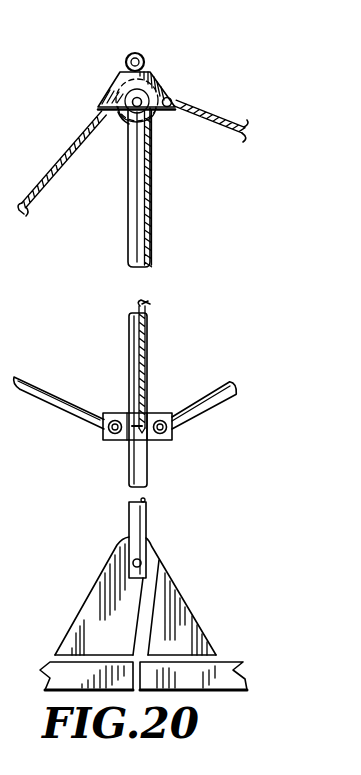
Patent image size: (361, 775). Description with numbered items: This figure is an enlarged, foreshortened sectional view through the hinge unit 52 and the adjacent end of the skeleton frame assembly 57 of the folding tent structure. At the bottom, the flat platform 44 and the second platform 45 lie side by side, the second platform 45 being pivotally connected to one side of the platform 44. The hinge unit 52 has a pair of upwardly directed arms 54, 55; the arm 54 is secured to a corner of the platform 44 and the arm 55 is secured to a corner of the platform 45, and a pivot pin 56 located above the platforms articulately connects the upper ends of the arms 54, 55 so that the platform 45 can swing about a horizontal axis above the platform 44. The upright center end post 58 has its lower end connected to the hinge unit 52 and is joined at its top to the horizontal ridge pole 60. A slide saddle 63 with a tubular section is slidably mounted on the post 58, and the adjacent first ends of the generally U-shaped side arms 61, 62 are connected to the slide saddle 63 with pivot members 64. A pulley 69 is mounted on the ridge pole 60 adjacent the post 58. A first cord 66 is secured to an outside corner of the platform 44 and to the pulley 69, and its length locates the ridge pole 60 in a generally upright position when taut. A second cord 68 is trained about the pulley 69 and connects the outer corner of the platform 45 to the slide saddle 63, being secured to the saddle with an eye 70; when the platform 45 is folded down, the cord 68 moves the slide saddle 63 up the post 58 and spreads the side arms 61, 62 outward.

The platform 44 is at (55, 668).
The second platform 45 is at (219, 673).
The hinge unit 52 is at (99, 575).
The arm 54 is at (90, 625).
The arm 55 is at (183, 620).
The pivot pin 56 is at (141, 560).
The frame assembly 57 is at (120, 204).
The center end post 58 is at (147, 520).
The ridge pole 60 is at (143, 54).
The side arm 61 is at (42, 388).
The side arm 62 is at (203, 400).
The slide saddle 63 is at (168, 442).
The pivot member 64 is at (110, 420).
The first cord 66 is at (205, 114).
The second cord 68 is at (60, 163).
The pulley 69 is at (119, 120).
The eye 70 is at (124, 441).